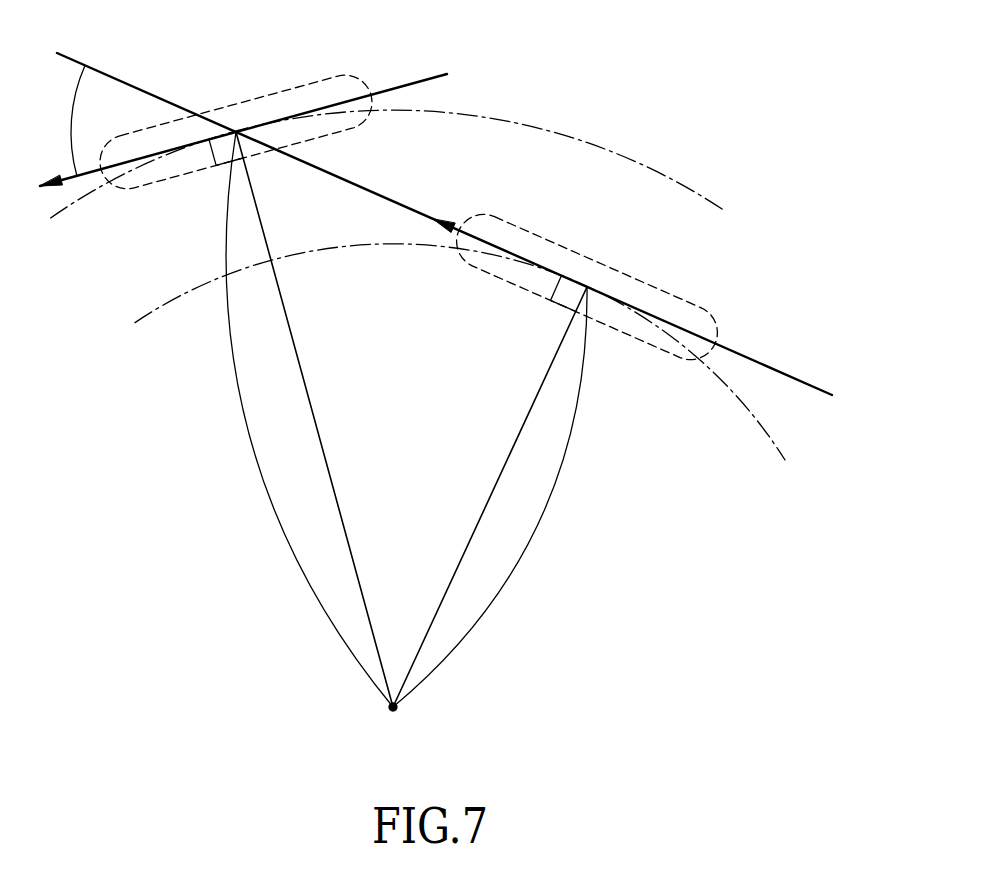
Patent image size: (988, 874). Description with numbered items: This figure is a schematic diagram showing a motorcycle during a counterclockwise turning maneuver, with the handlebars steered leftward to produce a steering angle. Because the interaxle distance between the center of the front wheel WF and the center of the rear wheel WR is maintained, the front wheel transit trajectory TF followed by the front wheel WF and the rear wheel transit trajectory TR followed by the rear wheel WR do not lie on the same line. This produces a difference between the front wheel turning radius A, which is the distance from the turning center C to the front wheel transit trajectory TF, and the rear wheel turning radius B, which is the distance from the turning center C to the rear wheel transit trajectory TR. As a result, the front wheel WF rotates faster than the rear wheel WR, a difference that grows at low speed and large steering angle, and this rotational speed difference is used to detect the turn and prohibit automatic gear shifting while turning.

The front wheel WF is at (306, 82).
The rear wheel WR is at (662, 287).
The front wheel transit trajectory TF is at (660, 170).
The rear wheel transit trajectory TR is at (745, 397).
The front wheel turning radius A is at (304, 419).
The rear wheel turning radius B is at (495, 497).
The turning center C is at (398, 707).